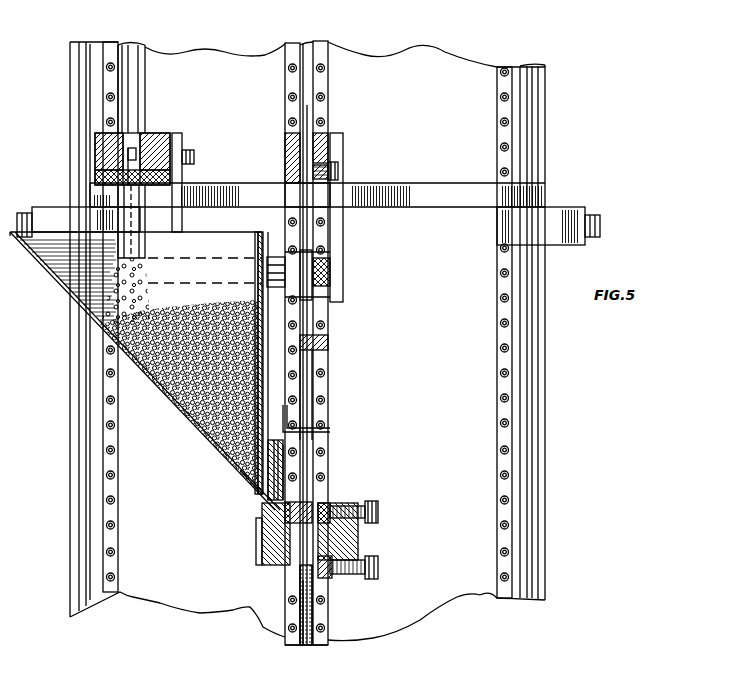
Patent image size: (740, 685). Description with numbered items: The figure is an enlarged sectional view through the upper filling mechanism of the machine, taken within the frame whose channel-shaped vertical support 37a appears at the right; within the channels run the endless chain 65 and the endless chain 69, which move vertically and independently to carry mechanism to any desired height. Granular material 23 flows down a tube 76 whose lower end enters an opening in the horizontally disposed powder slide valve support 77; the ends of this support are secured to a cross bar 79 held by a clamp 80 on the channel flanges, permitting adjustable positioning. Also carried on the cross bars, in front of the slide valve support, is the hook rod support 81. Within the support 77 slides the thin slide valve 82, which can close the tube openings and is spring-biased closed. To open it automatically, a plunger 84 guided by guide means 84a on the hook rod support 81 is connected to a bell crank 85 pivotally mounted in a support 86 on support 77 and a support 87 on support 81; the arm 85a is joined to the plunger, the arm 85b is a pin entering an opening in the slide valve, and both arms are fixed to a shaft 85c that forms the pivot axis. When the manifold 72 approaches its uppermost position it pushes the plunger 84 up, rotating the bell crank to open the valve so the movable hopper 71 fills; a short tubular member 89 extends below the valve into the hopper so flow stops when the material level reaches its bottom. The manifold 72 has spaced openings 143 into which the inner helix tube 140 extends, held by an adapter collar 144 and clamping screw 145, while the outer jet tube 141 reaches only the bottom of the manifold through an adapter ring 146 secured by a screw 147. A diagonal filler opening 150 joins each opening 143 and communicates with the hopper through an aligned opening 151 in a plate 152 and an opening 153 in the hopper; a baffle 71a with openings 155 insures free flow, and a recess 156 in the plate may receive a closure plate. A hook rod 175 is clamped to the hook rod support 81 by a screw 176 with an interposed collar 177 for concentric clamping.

The granular material 23 is at (157, 393).
The channel-shaped vertical support 37a is at (545, 140).
The endless chain 65 is at (510, 350).
The endless chain 69 is at (110, 487).
The movable hopper 71 is at (60, 282).
The baffle 71a is at (230, 462).
The manifold 72 is at (378, 514).
The tube 76 is at (145, 50).
The powder slide valve support 77 is at (150, 135).
The cross bar 79 is at (425, 190).
The clamp 80 is at (50, 212).
The hook rod support 81 is at (325, 140).
The slide valve 82 is at (152, 170).
The plunger 84 is at (318, 388).
The guide means 84a is at (287, 197).
The bell crank 85 is at (320, 271).
The arm of bell crank 85a is at (320, 256).
The arm of bell crank 85b is at (112, 158).
The shaft 85c is at (276, 240).
The support 86 is at (190, 178).
The support 87 is at (343, 238).
The short tubular member 89 is at (118, 240).
The inner helix tube 140 is at (318, 640).
The outer jet tube 141 is at (320, 620).
The opening 143 is at (320, 538).
The adapter collar 144 is at (322, 500).
The clamping screw 145 is at (378, 508).
The adapter ring 146 is at (332, 576).
The screw 147 is at (378, 568).
The diagonal filler opening 150 is at (262, 545).
The opening 151 is at (262, 510).
The plate 152 is at (268, 563).
The opening 153 is at (255, 494).
The opening 155 is at (232, 478).
The recess 156 is at (318, 412).
The hook rod 175 is at (307, 46).
The screw 176 is at (340, 165).
The collar 177 is at (293, 165).